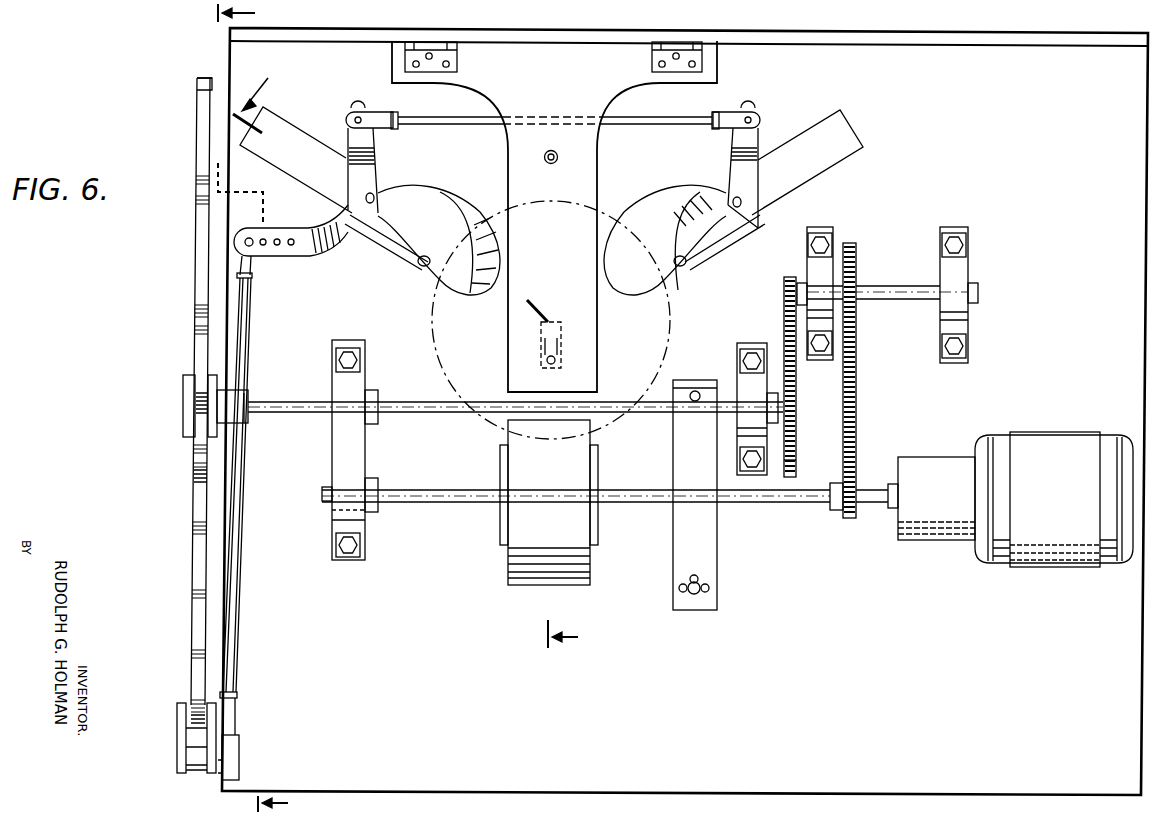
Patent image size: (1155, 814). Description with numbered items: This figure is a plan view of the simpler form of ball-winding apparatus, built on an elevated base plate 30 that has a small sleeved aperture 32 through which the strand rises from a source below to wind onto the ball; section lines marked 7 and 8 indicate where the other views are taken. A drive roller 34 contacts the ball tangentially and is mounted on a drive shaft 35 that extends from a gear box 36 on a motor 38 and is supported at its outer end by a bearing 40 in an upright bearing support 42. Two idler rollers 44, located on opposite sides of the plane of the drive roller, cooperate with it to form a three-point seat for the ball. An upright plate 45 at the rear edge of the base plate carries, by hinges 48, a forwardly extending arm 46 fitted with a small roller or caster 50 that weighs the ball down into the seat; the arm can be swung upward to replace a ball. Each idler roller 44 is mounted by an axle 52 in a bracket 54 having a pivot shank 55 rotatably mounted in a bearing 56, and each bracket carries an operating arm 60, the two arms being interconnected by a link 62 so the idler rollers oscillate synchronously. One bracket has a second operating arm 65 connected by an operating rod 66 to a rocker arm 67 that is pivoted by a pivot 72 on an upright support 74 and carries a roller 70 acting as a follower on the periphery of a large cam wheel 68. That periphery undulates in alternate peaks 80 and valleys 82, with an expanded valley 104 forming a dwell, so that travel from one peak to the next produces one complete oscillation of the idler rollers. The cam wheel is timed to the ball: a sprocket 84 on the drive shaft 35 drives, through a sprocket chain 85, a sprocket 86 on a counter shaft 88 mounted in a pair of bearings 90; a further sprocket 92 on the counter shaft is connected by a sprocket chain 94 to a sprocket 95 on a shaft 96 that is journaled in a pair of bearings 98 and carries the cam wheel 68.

The base plate 30 is at (685, 411).
The upright plate 45 is at (1030, 38).
The section line 8- 8 is at (688, 333).
The section line 7- 7 is at (406, 362).
The arm 46 is at (554, 216).
The hinges 48 is at (458, 60).
The sleeved aperture 32 is at (551, 315).
The roller or caster 50 is at (561, 340).
The link 62 is at (660, 125).
The bearing 56 is at (290, 128).
The operating arm 60 is at (362, 133).
The pivot shank 55 is at (374, 196).
The idler rollers 44 is at (448, 212).
The bracket 54 is at (375, 232).
The axle 52 is at (420, 266).
The second operating arm 65 is at (298, 258).
The operating rod 66 is at (237, 575).
The cam wheel 68 is at (190, 332).
The lower dwell or expanded valley 104 is at (197, 297).
The peaks 80 is at (185, 408).
The valleys 82 is at (190, 476).
The roller 70 is at (178, 712).
The rocker arm 67 is at (176, 738).
The pivot 72 is at (200, 760).
The upright support 74 is at (238, 752).
The shaft 96 is at (654, 415).
The upright bearing support 42 is at (350, 448).
The bearing 40 is at (370, 500).
The bearings 98 is at (742, 388).
The drive shaft 35 is at (460, 505).
The drive roller 34 is at (535, 560).
The sprocket chain 94 is at (786, 335).
The sprocket 92 is at (785, 290).
The sprocket 95 is at (795, 455).
The sprocket chain 85 is at (858, 410).
The sprocket 86 is at (855, 288).
The counter shaft 88 is at (902, 300).
The bearings 90 is at (812, 280).
The sprocket 84 is at (835, 512).
The gear box 36 is at (945, 535).
The motor 38 is at (1055, 450).